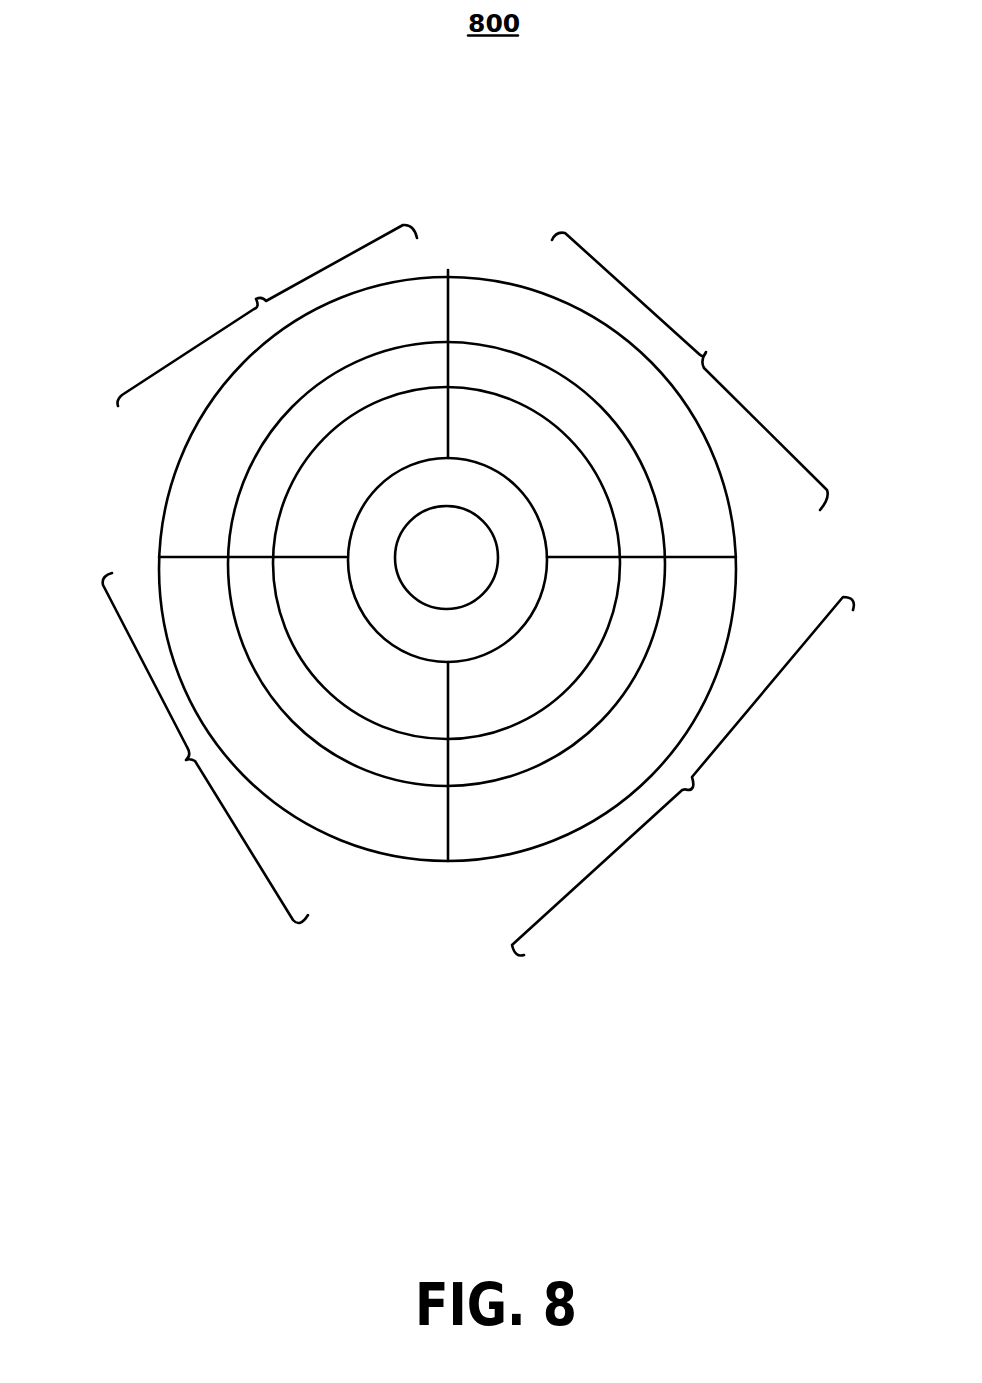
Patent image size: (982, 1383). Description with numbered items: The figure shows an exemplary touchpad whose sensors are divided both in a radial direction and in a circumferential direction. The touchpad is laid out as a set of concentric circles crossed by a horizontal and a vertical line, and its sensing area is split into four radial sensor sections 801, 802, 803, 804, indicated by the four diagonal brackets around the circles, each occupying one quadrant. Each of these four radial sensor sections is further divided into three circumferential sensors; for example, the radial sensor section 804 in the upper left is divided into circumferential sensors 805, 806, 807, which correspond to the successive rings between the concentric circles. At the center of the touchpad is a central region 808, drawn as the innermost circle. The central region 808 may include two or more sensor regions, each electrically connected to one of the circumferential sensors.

The radial sensor section 801 is at (706, 352).
The radial sensor section 802 is at (689, 791).
The radial sensor section 803 is at (183, 760).
The radial sensor section 804 is at (256, 299).
The circumferential sensor 805 is at (327, 508).
The circumferential sensor 806 is at (268, 482).
The circumferential sensor 807 is at (213, 452).
The central region 808 is at (437, 565).